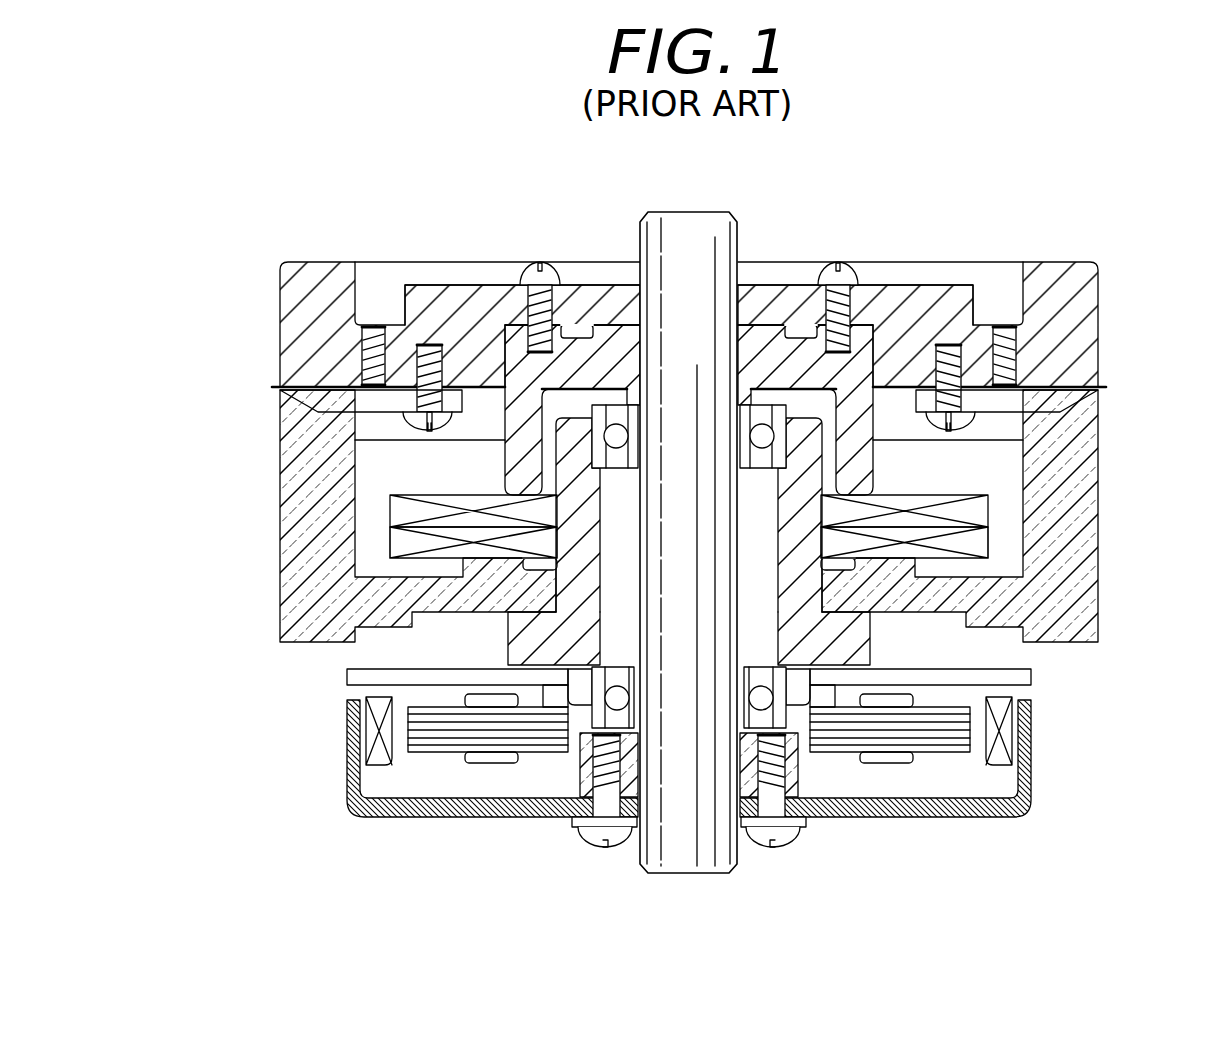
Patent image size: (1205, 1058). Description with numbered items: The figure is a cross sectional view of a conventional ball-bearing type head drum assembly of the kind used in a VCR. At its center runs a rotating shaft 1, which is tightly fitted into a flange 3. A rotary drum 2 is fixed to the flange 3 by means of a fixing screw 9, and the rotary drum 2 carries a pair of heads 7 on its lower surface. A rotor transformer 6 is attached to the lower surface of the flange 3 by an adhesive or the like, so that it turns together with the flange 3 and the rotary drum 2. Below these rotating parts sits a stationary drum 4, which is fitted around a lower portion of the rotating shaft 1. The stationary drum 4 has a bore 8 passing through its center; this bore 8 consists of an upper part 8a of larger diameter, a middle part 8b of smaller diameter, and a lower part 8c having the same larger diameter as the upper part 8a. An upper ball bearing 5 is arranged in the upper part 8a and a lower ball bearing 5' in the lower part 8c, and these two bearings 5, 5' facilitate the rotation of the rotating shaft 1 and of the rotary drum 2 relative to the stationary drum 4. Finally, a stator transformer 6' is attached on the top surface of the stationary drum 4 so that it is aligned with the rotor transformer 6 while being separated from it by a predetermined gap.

The rotating shaft 1 is at (740, 234).
The rotary drum 2 is at (280, 321).
The flange 3 is at (610, 283).
The stationary drum 4 is at (280, 560).
The upper ball bearing 5 is at (656, 344).
The lower ball bearing 5' is at (733, 804).
The rotor transformer 6 is at (767, 493).
The stator transformer 6' is at (772, 546).
The heads 7 is at (345, 400).
The bore 8 is at (208, 700).
The upper part of the bore 8a is at (597, 450).
The middle part of the bore 8b is at (600, 553).
The lower part of the bore 8c is at (570, 672).
The fixing screw 9 is at (538, 282).